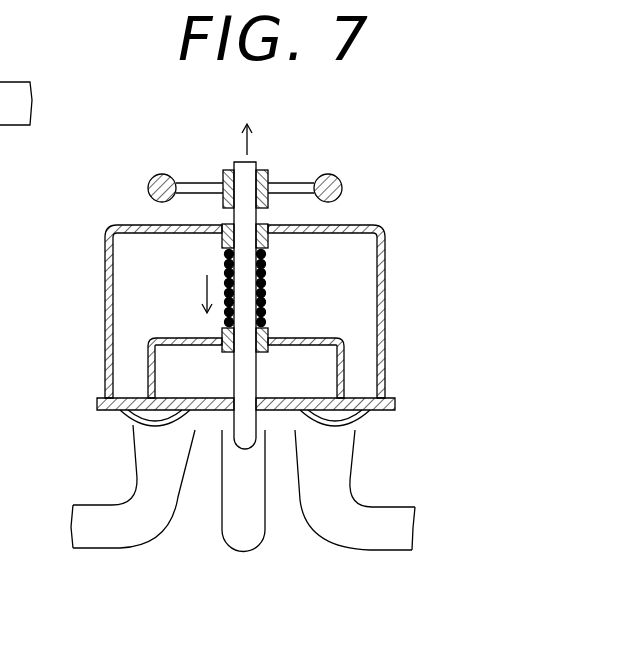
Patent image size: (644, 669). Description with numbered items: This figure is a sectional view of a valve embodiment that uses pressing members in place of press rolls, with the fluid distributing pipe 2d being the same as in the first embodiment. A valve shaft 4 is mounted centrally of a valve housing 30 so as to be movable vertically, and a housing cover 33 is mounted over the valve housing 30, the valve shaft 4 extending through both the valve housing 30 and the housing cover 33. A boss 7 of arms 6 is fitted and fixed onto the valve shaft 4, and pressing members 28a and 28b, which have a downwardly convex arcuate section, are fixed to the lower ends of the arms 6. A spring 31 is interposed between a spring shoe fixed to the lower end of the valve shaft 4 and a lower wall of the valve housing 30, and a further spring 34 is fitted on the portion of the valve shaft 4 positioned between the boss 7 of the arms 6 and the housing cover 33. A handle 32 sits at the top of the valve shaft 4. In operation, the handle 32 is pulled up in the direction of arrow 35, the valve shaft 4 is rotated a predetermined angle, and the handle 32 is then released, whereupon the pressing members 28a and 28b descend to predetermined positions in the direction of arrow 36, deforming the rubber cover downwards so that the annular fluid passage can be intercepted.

The spring 31 is at (0, 15).
The fluid distributing pipe 2d is at (0, 83).
The handle 32 is at (336, 182).
The housing cover 33 is at (385, 334).
The spring 34 is at (265, 288).
The arrow 35 is at (247, 147).
The arrow 36 is at (207, 287).
The valve shaft 4 is at (252, 310).
The boss 7 is at (222, 333).
The arms 6 is at (150, 364).
The pressing member 28a is at (363, 420).
The pressing member 28b is at (117, 418).
The valve housing 30 is at (212, 420).